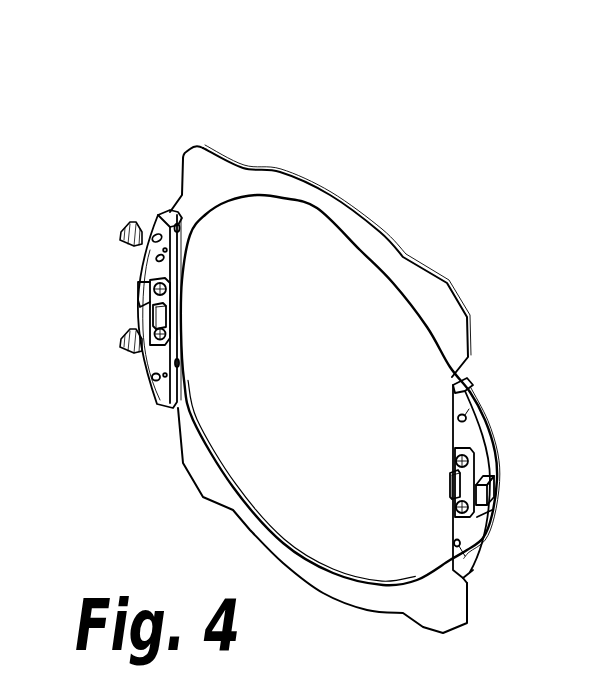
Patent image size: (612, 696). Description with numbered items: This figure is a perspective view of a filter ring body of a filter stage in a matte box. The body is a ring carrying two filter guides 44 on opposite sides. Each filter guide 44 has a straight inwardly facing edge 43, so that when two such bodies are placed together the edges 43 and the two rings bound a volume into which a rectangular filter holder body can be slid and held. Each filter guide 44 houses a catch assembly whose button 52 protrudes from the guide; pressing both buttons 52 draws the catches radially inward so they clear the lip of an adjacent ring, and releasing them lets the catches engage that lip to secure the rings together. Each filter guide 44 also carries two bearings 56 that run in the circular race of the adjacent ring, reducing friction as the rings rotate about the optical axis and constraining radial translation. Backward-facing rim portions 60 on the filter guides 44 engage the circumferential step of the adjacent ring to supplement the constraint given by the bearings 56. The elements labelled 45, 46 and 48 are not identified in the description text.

The straight inwardly facing edge 43 is at (182, 266).
The filter guide 44 is at (160, 224).
The annular rim 45 is at (262, 183).
The knurled knob 46 is at (139, 267).
The adjustment block 48 is at (168, 318).
The button 52 is at (140, 297).
The bearing 56 is at (157, 381).
The rim portion 60 is at (480, 533).